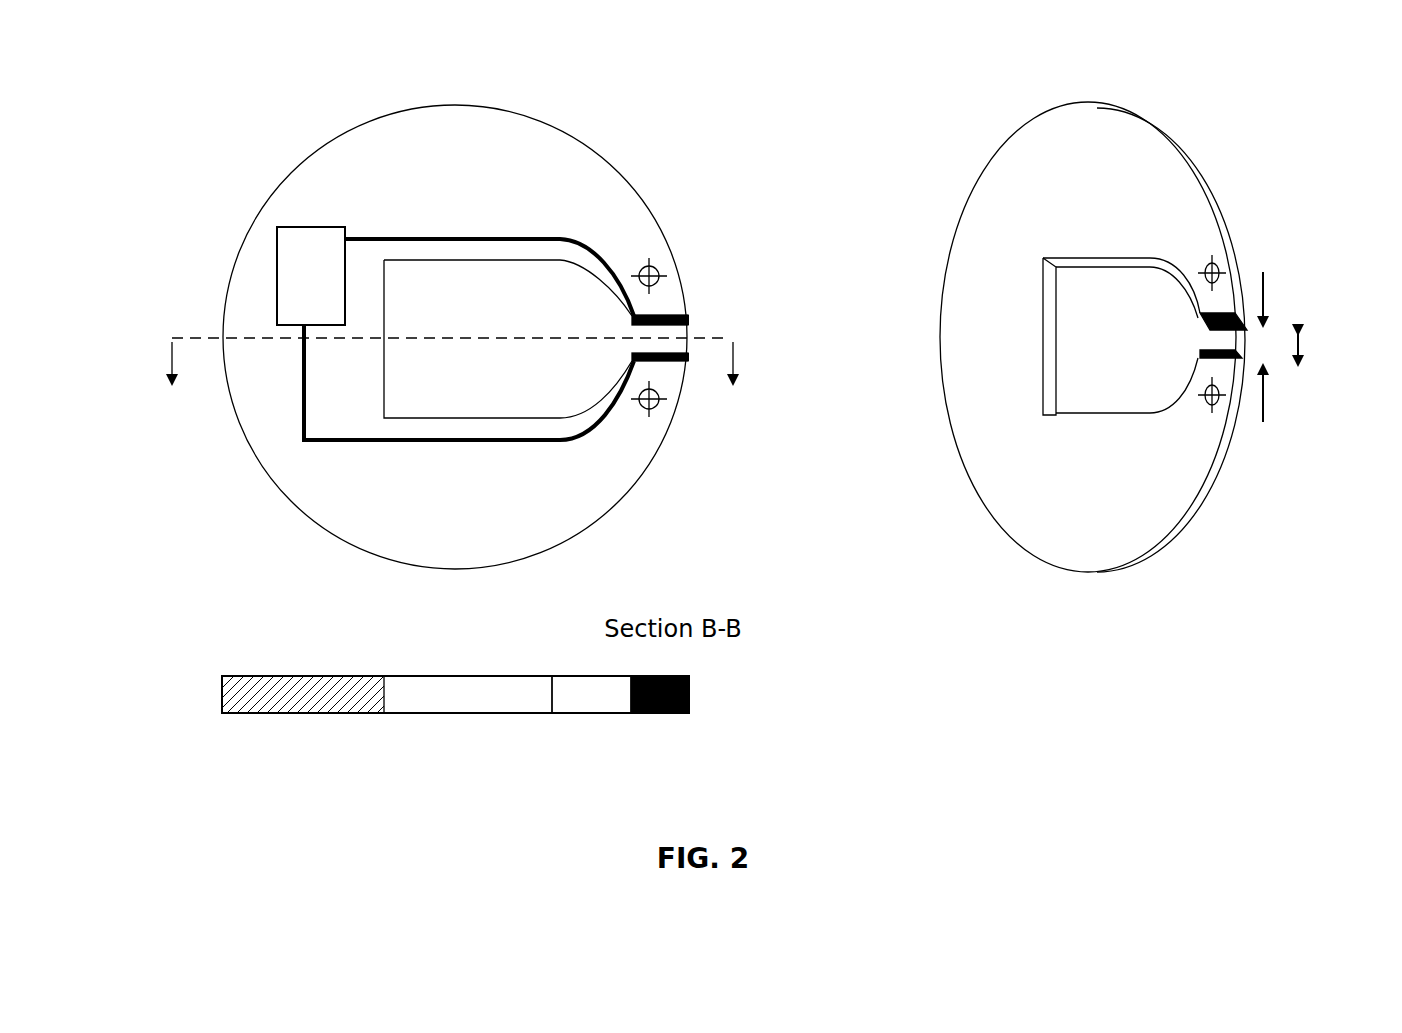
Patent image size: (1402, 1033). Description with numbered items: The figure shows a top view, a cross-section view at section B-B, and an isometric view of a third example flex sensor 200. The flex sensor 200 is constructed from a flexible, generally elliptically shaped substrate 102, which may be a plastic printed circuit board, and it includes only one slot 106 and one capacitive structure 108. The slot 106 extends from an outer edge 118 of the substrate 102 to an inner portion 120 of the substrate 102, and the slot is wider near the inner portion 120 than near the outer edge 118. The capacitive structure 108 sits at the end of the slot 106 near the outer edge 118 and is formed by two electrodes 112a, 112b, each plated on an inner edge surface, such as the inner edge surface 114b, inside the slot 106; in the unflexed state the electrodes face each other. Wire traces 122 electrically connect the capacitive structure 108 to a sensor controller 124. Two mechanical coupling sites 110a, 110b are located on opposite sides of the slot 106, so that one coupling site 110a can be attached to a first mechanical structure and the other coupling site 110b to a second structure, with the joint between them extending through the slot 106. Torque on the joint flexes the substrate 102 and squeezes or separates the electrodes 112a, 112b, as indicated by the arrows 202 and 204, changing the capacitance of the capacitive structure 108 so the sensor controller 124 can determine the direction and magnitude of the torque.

The flex sensor 200 is at (214, 76).
The substrate 102 is at (338, 136).
The slot 106 is at (792, 338).
The capacitive structure 108 is at (612, 321).
The mechanical coupling site 110a is at (640, 395).
The mechanical coupling site 110b is at (655, 266).
The electrode 112a is at (672, 318).
The electrode 112b is at (672, 361).
The inner edge surface 114b is at (574, 698).
The outer edge 118 is at (665, 440).
The inner portion 120 is at (367, 292).
The wire trace 122 is at (412, 239).
The sensor controller 124 is at (292, 277).
The arrow 202 is at (1300, 351).
The arrow 204 is at (1268, 297).